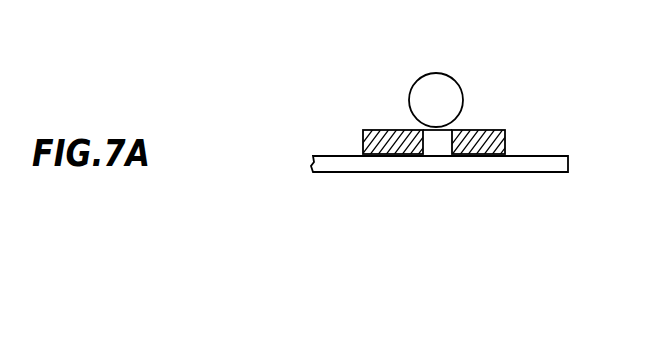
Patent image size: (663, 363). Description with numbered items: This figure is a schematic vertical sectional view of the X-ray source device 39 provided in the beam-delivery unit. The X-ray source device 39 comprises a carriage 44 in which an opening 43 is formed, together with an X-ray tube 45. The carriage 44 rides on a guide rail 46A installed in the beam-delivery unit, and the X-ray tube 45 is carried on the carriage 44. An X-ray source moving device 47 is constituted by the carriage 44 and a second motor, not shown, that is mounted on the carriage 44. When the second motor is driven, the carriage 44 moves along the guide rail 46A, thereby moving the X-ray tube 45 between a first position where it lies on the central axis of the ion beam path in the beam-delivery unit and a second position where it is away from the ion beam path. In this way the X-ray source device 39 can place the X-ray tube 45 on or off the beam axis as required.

The X-ray source device 39 is at (508, 107).
The opening 43 is at (437, 148).
The carriage 44 is at (377, 128).
The X-ray tube 45 is at (453, 73).
The guide rail 46A is at (340, 172).
The X-ray source moving device 47 is at (363, 147).